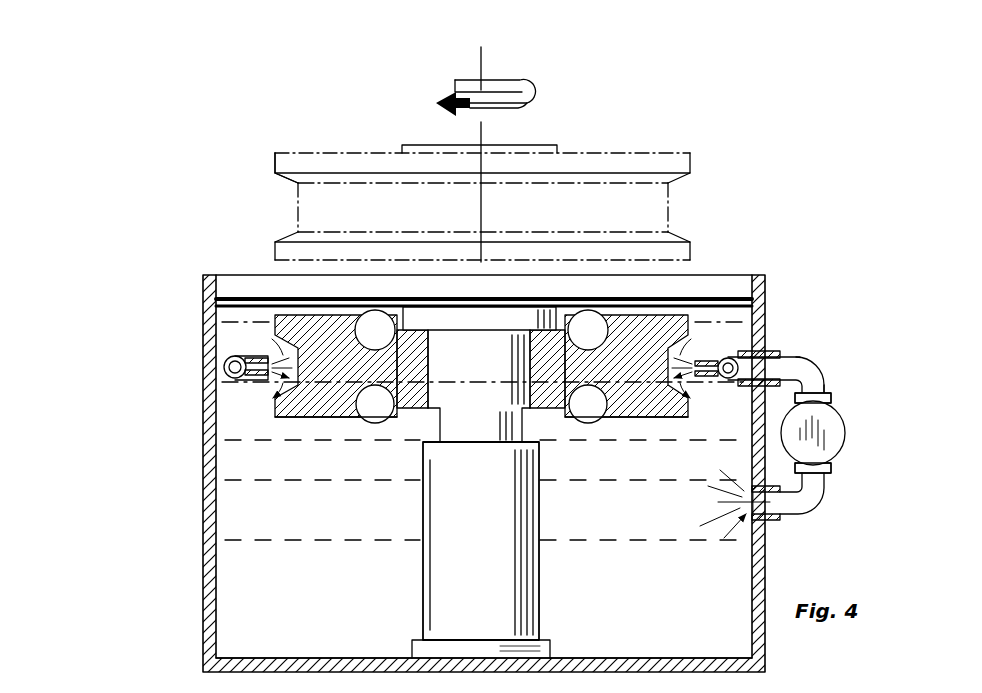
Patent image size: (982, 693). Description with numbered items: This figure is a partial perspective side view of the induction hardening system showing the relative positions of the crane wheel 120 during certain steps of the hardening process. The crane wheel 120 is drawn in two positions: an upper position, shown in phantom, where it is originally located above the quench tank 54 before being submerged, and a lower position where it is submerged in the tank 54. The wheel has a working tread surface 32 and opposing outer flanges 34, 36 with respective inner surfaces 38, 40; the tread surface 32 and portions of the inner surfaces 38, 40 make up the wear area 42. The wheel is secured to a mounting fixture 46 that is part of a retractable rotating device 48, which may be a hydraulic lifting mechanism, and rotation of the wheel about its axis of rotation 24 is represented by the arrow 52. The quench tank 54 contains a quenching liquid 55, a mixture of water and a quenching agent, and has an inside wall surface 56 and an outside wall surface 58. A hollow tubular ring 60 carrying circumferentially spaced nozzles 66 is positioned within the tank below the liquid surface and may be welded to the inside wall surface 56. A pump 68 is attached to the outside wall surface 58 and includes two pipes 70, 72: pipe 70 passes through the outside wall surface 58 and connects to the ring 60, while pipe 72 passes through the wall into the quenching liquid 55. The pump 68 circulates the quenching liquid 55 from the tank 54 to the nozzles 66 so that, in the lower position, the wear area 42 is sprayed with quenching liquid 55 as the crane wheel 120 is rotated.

The axis of rotation 24 is at (483, 57).
The arrow 52 is at (532, 100).
The working tread surface 32 is at (451, 292).
The outer flange 34 is at (680, 153).
The flange inner surface 38 is at (691, 172).
The wear area 42 is at (676, 194).
The flange inner surface 40 is at (681, 236).
The outer flange 36 is at (691, 250).
The crane wheel 120 is at (270, 175).
The quench tank 54 is at (200, 308).
The outside wall surface 58 is at (766, 300).
The quenching liquid 55 is at (632, 534).
The inside wall surface 56 is at (217, 563).
The mounting fixture 46 is at (482, 374).
The retractable rotating device 48 is at (490, 534).
The hollow tubular ring 60 is at (230, 368).
The nozzles 66 is at (258, 378).
The pipe 70 is at (815, 358).
The pump 68 is at (832, 430).
The pipe 72 is at (826, 506).